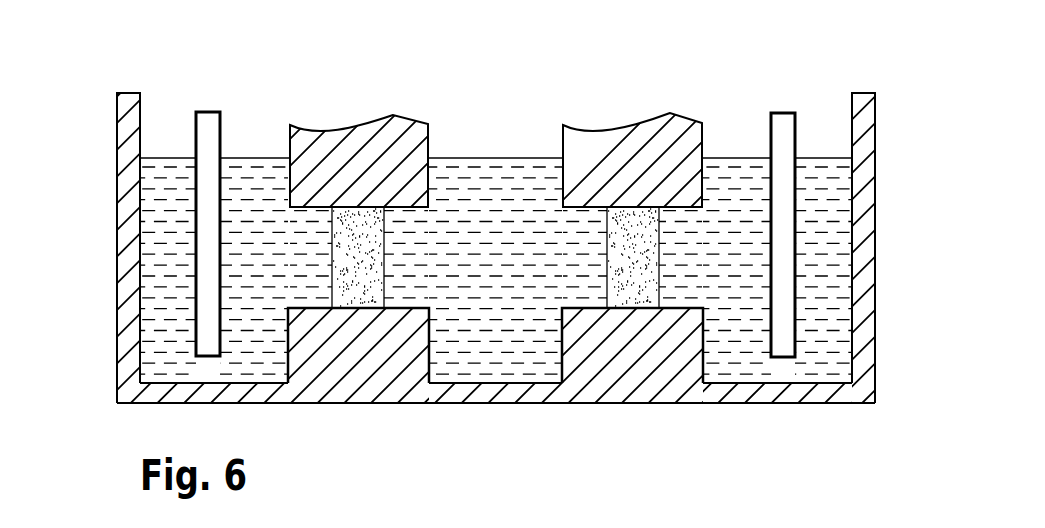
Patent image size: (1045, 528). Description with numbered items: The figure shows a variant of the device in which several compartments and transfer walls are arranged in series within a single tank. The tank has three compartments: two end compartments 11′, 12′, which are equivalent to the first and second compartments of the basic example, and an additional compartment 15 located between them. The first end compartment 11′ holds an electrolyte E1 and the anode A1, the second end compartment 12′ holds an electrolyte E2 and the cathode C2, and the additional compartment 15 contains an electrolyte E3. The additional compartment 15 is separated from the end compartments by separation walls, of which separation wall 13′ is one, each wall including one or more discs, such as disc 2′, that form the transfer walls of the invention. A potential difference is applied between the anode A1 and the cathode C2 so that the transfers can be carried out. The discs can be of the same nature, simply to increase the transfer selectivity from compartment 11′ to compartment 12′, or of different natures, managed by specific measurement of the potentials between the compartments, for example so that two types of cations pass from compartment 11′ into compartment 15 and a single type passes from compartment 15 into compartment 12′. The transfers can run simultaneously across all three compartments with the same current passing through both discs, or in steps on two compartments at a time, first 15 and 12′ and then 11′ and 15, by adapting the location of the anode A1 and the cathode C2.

The second end compartment 12′ is at (153, 240).
The first end compartment 11′ is at (838, 259).
The additional compartment 15 is at (488, 347).
The disc 2′ is at (633, 292).
The separation wall 13′ is at (642, 172).
The cathode C2 is at (206, 131).
The anode A1 is at (781, 125).
The electrolyte E2 is at (290, 263).
The electrolyte E3 is at (520, 263).
The electrolyte E1 is at (738, 263).